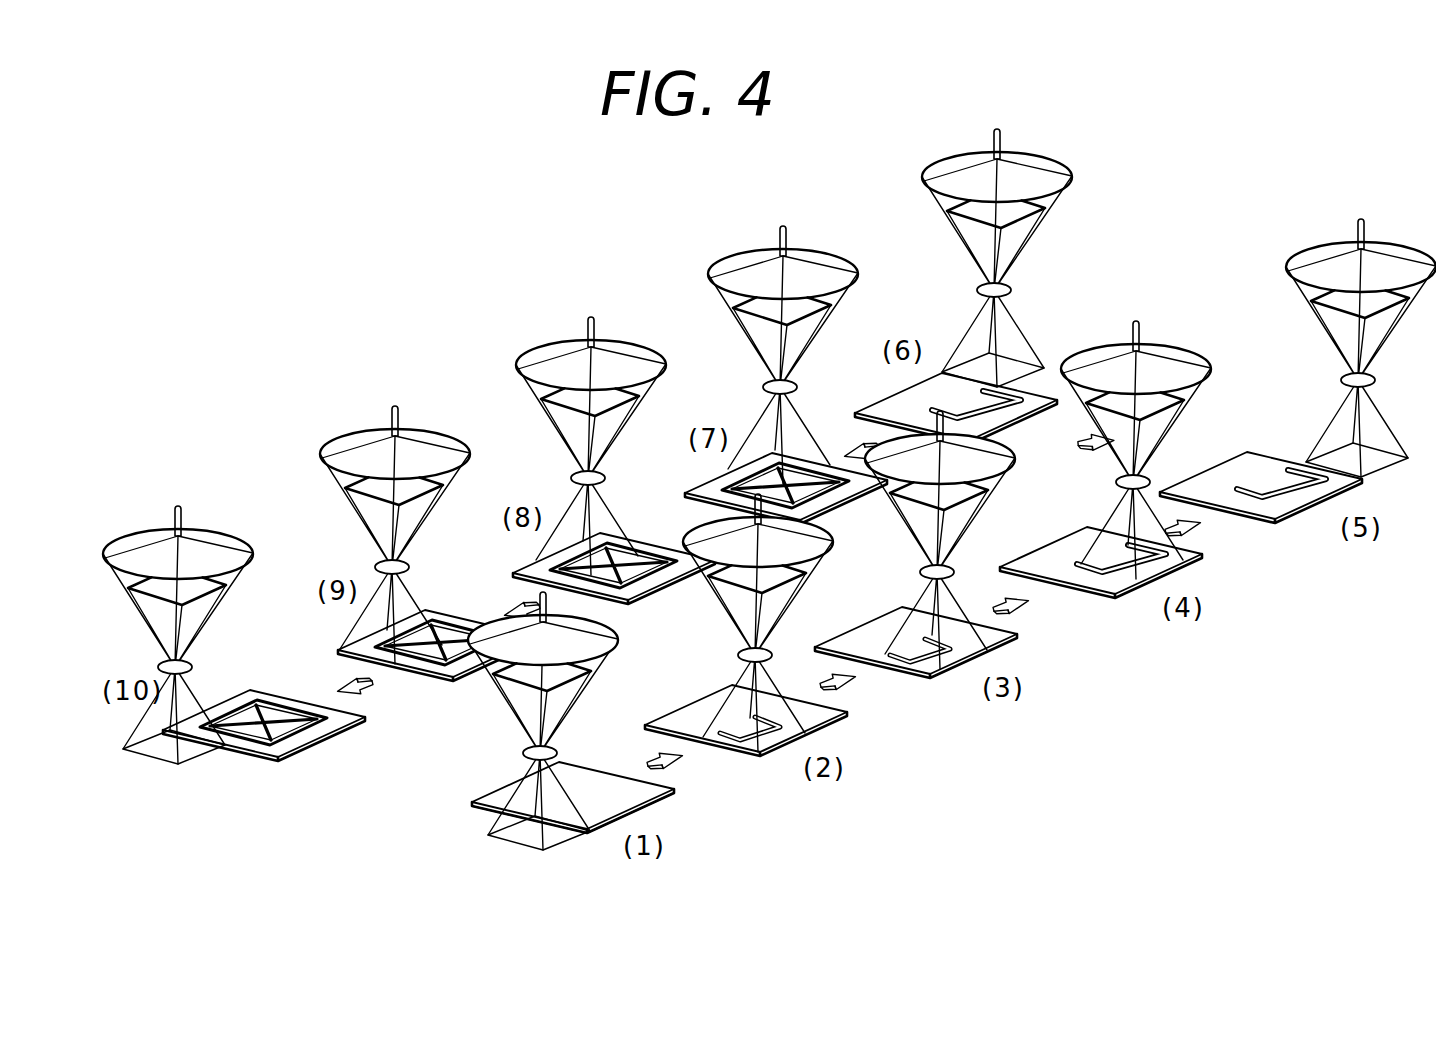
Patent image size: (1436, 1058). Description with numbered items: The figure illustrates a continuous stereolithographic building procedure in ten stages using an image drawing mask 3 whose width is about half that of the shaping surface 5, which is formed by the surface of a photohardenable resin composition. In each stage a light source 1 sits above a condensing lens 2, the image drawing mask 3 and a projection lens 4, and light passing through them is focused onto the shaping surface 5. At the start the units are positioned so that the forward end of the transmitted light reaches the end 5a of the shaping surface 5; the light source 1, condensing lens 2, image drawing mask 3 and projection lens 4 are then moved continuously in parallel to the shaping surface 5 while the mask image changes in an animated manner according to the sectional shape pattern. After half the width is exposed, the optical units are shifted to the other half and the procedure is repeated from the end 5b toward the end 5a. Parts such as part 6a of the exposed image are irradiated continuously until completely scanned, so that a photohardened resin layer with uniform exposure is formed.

The light source 1 is at (548, 601).
The condensing lens 2 is at (575, 640).
The image drawing mask 3 is at (566, 673).
The projection lens 4 is at (522, 755).
The shaping surface 5 is at (625, 793).
The one end of the shaping surface 5a is at (569, 838).
The other end of the shaping surface 5b is at (1267, 452).
The part of the exposed image 6a is at (748, 742).